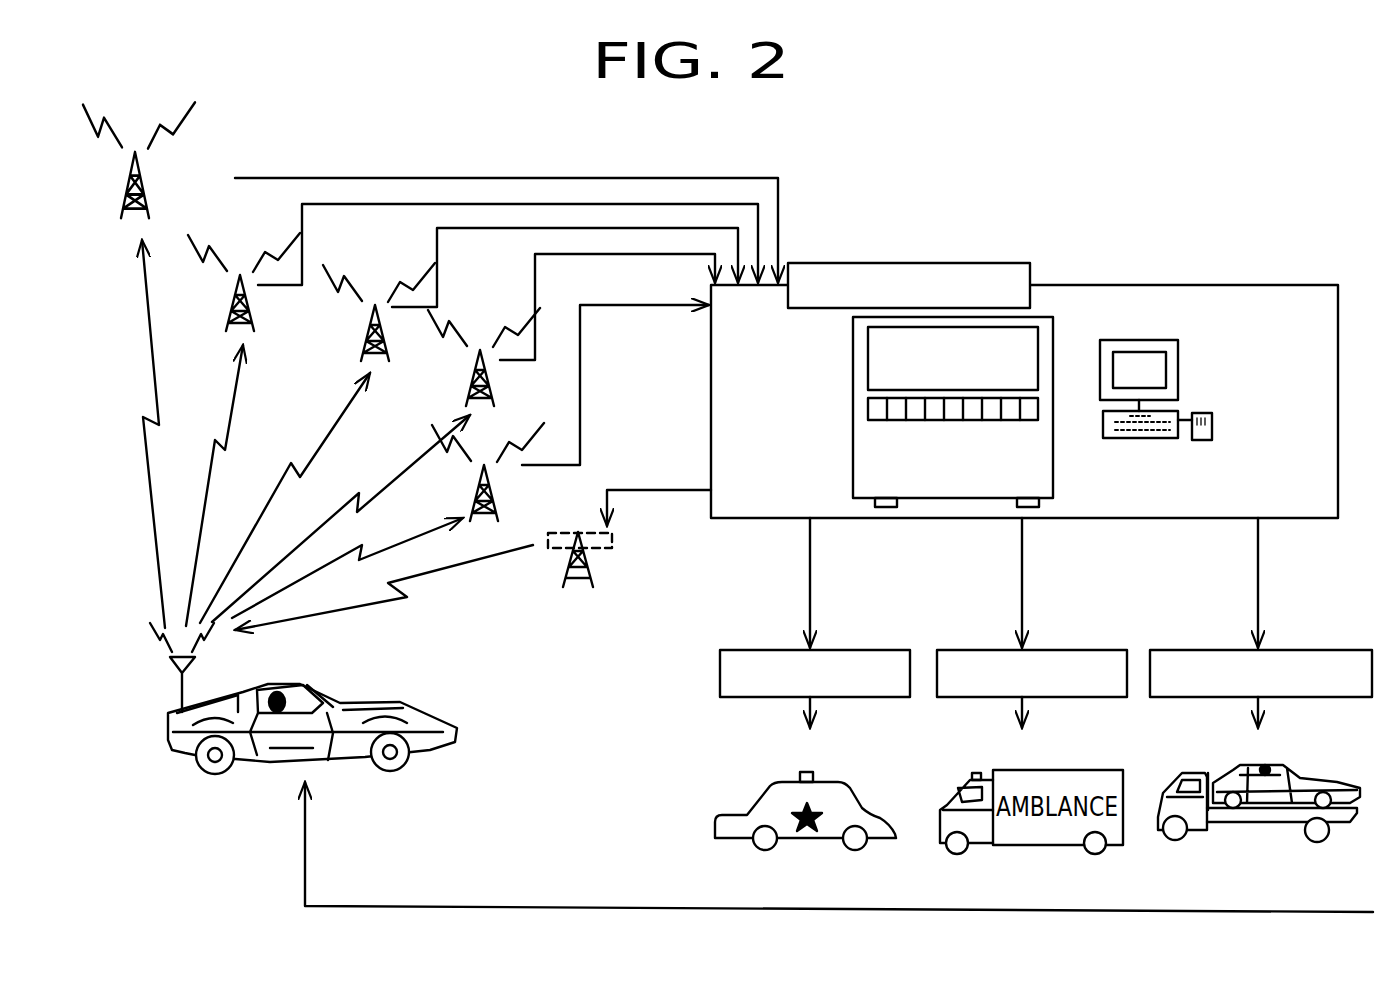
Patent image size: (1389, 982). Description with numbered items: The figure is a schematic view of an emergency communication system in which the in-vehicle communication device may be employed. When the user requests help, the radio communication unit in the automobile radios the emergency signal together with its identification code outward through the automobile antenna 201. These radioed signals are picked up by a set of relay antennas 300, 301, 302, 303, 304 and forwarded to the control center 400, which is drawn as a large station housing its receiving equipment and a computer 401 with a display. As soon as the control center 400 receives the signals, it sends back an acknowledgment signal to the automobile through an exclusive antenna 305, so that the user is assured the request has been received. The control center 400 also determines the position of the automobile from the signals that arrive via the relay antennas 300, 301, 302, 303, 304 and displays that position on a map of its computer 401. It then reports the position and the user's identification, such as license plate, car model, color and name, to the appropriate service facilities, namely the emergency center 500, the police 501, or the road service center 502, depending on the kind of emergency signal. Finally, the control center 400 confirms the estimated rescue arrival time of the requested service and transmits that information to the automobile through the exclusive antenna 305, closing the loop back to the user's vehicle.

The automobile antenna 201 is at (170, 665).
The relay antenna 300 is at (252, 296).
The relay antenna 301 is at (388, 322).
The relay antenna 302 is at (492, 380).
The relay antenna 303 is at (147, 186).
The relay antenna 304 is at (500, 491).
The exclusive antenna 305 is at (591, 575).
The control center 400 is at (1157, 285).
The computer 401 is at (1178, 370).
The emergency center 500 is at (1090, 650).
The police 501 is at (871, 650).
The road service center 502 is at (1325, 650).